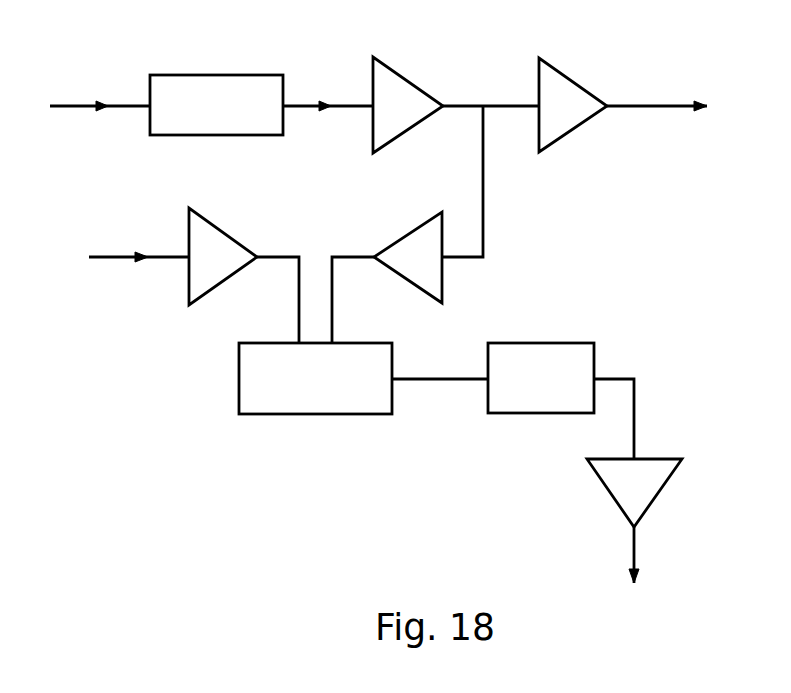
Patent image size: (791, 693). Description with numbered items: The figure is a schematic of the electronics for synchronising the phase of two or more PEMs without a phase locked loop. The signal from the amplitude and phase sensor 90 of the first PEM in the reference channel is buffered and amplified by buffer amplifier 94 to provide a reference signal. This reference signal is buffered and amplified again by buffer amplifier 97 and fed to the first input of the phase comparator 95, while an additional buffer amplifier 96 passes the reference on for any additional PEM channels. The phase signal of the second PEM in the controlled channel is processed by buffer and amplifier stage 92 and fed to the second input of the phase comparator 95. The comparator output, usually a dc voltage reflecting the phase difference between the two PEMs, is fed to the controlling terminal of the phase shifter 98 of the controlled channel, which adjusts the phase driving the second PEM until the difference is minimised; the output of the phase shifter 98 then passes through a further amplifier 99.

The amplitude and phase sensor 90 is at (258, 75).
The buffer and amplifier stage 92 is at (225, 233).
The buffer amplifier 94 is at (414, 78).
The phase comparator 95 is at (316, 415).
The buffer amplifier 96 is at (576, 78).
The buffer amplifier 97 is at (410, 232).
The phase shifter 98 is at (549, 343).
The amplifier 99 is at (660, 459).